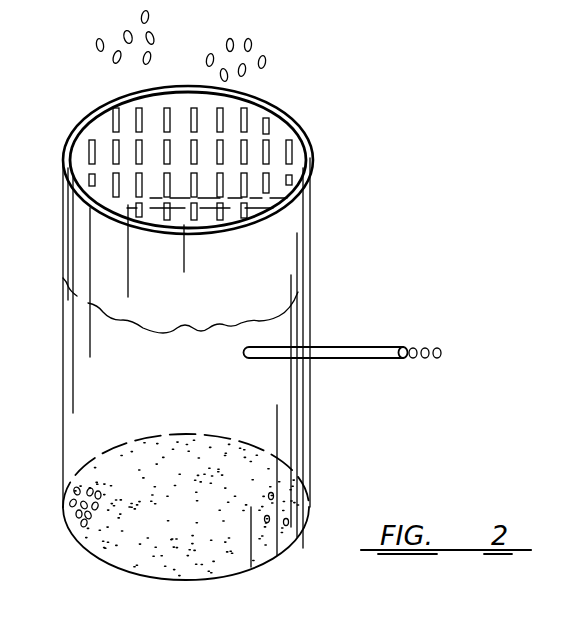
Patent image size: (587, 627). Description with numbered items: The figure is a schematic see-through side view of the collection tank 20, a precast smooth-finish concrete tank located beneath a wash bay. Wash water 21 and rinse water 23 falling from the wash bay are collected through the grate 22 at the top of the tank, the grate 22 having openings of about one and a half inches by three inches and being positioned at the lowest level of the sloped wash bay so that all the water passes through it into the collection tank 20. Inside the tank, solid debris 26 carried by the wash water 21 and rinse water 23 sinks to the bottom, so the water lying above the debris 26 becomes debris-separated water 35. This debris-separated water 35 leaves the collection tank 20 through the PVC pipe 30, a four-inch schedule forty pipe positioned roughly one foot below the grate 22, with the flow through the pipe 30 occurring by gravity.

The collection tank 20 is at (63, 309).
The wash water 21 is at (153, 34).
The grate 22 is at (280, 138).
The rinse water 23 is at (249, 45).
The solid debris 26 is at (99, 517).
The PVC pipe 30 is at (343, 346).
The debris-separated water 35 is at (425, 348).